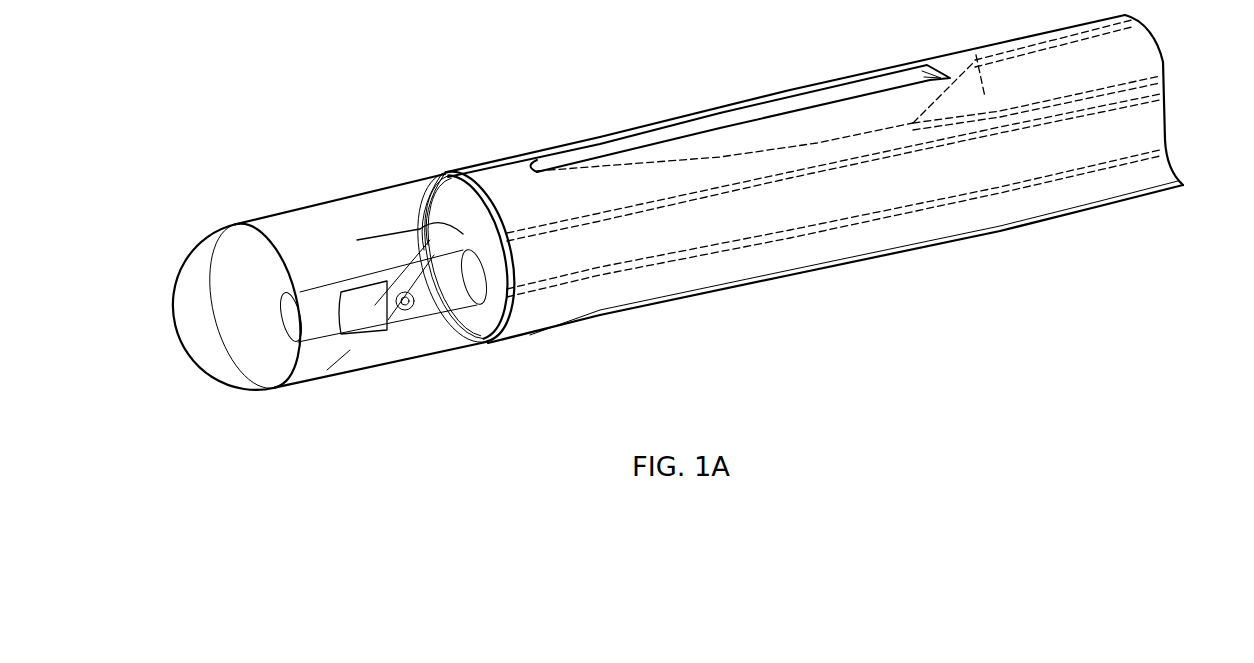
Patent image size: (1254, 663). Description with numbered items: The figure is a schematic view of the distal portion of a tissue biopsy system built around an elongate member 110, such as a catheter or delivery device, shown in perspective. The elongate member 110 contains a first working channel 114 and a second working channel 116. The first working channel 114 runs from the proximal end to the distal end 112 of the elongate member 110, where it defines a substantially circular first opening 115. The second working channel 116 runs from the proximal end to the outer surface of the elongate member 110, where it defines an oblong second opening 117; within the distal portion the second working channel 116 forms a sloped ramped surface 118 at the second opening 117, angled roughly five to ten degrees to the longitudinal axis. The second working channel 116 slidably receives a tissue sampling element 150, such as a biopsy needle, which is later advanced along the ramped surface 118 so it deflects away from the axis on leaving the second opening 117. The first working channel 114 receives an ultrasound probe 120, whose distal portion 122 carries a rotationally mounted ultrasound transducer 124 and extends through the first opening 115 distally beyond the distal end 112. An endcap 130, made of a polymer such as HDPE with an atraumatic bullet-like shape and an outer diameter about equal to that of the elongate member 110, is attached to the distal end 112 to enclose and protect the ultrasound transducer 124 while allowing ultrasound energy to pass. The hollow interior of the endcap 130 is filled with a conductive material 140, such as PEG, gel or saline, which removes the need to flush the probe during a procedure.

The elongate member 110 is at (903, 237).
The distal end 112 is at (525, 323).
The first working channel 114 is at (1047, 180).
The first opening 115 is at (478, 308).
The second working channel 116 is at (1152, 83).
The second opening 117 is at (697, 125).
The ramped surface 118 is at (817, 146).
The ultrasound probe 120 is at (450, 290).
The distal portion 122 is at (357, 240).
The ultrasound transducer 124 is at (361, 312).
The endcap 130 is at (293, 385).
The conductive material 140 is at (268, 228).
The tissue sampling element 150 is at (973, 48).